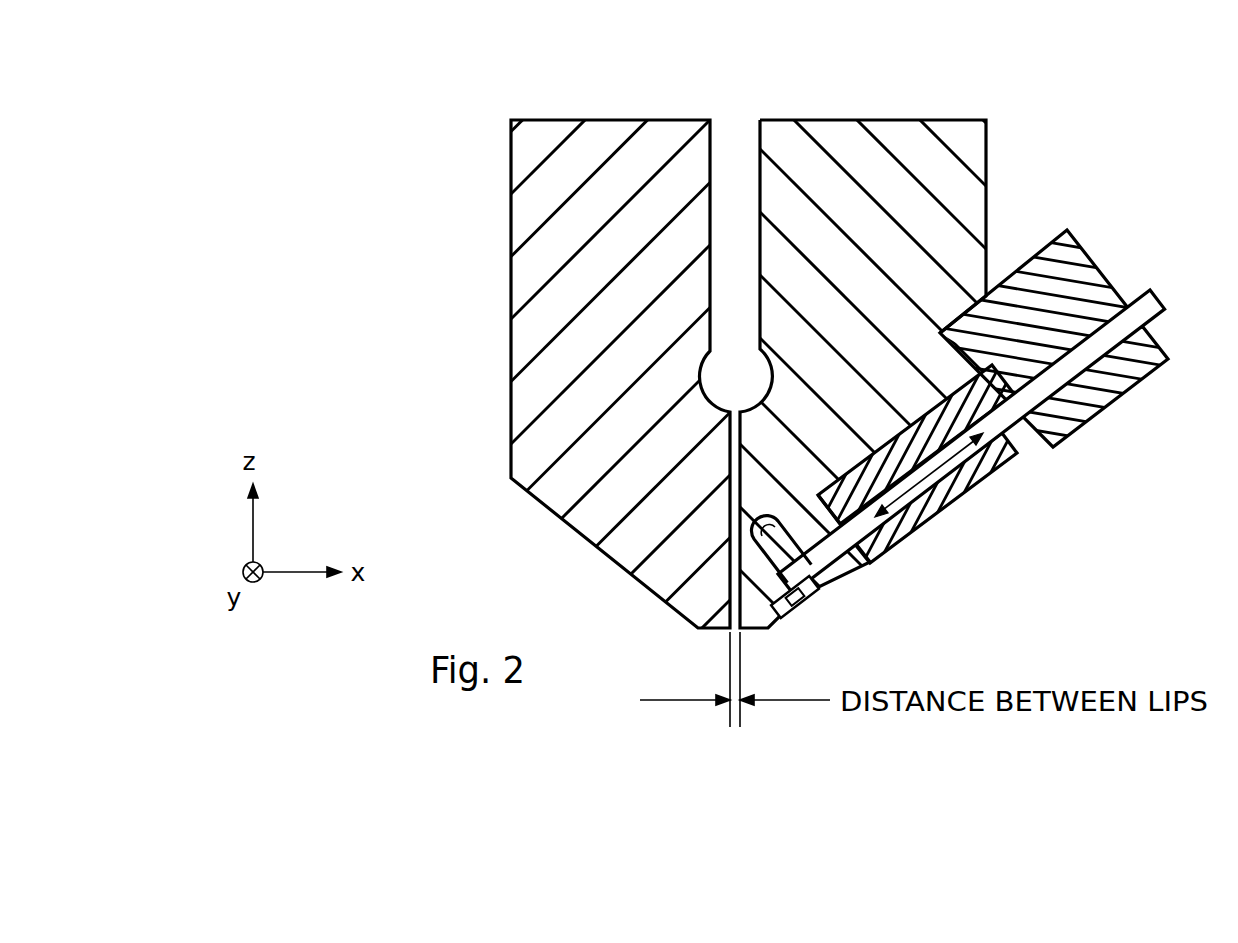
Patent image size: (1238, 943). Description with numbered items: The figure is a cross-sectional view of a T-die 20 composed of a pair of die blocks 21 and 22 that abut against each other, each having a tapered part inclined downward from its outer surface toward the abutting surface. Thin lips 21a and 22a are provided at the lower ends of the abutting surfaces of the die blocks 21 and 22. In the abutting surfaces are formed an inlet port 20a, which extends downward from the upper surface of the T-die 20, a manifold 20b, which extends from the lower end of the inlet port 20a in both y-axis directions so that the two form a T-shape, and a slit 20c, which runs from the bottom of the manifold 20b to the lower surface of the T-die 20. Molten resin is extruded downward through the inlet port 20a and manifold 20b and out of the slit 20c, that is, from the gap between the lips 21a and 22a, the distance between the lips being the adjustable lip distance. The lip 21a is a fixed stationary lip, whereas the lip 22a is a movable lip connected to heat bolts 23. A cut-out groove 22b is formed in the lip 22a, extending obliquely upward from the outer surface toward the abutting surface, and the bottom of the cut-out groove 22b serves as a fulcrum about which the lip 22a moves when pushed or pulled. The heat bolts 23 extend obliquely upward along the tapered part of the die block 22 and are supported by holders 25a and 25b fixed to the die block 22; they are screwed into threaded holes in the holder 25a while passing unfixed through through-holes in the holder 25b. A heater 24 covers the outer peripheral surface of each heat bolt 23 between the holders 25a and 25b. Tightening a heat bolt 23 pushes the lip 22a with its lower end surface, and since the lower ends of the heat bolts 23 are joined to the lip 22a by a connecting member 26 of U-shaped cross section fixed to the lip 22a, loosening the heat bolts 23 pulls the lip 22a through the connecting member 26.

The T-die 20 is at (1055, 182).
The inlet port 20a is at (712, 137).
The manifold 20b is at (715, 367).
The slit 20c is at (738, 497).
The die block 21 is at (608, 133).
The lip 21a is at (720, 630).
The die block 22 is at (836, 133).
The lip 22a is at (750, 630).
The cut-out groove 22b is at (770, 523).
The heat bolt 23 is at (1160, 300).
The heater 24 is at (984, 472).
The holder 25a is at (1075, 240).
The holder 25b is at (861, 572).
The connecting member 26 is at (803, 610).